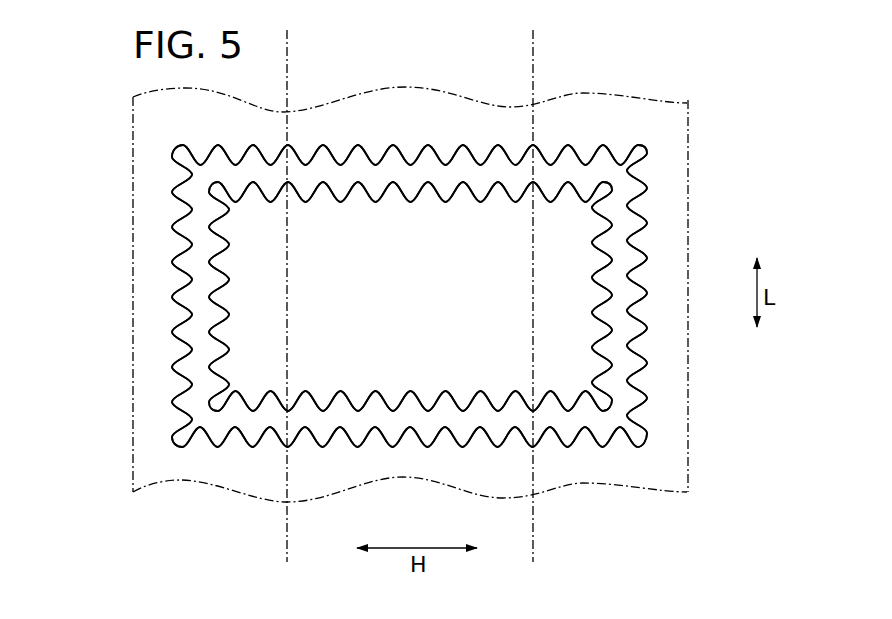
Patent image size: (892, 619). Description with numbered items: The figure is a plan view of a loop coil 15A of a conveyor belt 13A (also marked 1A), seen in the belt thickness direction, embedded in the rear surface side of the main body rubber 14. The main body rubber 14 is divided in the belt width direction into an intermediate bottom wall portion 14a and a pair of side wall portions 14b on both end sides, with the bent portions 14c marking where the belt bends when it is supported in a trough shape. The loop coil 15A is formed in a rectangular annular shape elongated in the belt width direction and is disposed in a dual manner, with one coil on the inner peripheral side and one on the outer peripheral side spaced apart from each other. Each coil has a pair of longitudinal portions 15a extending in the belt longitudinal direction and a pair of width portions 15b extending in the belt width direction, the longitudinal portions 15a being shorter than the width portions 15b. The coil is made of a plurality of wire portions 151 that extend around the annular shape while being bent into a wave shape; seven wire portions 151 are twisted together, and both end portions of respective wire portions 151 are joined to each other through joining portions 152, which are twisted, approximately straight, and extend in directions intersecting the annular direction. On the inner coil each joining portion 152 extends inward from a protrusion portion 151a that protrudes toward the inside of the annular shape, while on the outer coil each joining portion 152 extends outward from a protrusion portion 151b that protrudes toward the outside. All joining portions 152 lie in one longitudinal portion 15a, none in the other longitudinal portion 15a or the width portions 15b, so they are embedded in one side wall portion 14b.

The sheet / device 1A is at (481, 282).
The conveyor belt 13A is at (698, 120).
The main body rubber 14 is at (160, 465).
The bottom wall portion 14a is at (325, 482).
The side wall portions 14b is at (230, 472).
The bent portions 14c is at (287, 517).
The loop coil 15A is at (641, 140).
The longitudinal portions 15a is at (175, 173).
The width portions 15b is at (496, 138).
The wire portions 151 is at (290, 143).
The protrusion portion 151a is at (232, 338).
The protrusion portion 151b is at (169, 331).
The joining portions 152 is at (169, 227).